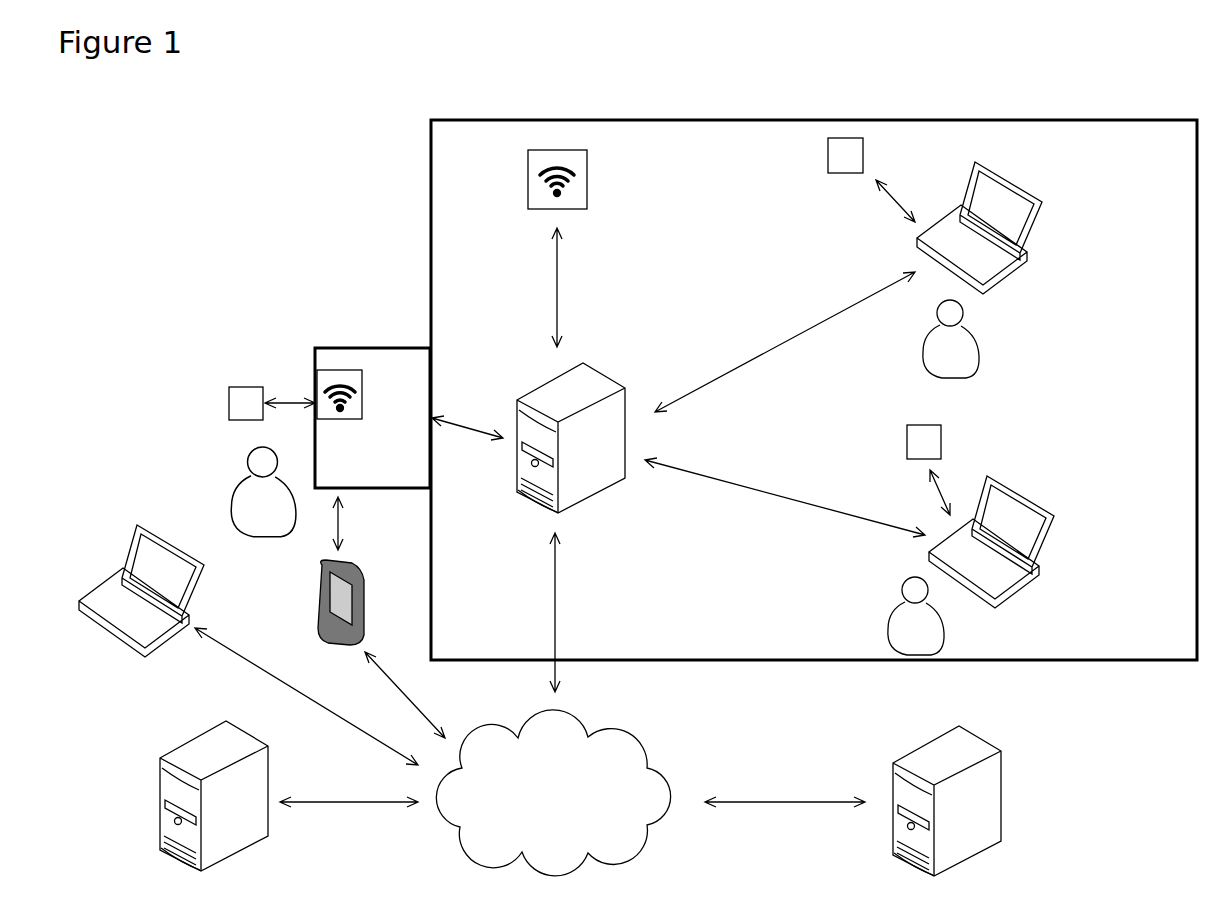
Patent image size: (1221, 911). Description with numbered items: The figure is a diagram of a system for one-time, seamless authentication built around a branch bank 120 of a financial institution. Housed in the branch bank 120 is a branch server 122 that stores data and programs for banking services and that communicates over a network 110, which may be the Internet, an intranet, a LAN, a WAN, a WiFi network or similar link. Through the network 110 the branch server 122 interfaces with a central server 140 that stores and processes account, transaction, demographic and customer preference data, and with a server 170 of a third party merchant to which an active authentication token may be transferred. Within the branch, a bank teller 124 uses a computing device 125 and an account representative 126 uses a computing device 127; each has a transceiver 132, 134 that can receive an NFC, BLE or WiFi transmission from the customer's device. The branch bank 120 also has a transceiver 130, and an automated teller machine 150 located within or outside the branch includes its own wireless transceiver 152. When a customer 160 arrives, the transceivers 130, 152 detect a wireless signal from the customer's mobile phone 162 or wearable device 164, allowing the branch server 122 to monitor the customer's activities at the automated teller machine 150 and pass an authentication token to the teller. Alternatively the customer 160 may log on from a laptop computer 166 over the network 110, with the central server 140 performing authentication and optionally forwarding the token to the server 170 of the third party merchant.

The network 110 is at (553, 793).
The branch bank 120 is at (430, 200).
The branch server 122 is at (587, 500).
The bank teller 124 is at (978, 345).
The computing device 125 is at (1017, 185).
The account representative 126 is at (942, 628).
The computing device 127 is at (1043, 548).
The transceiver 130 is at (528, 169).
The transceiver 132 is at (878, 150).
The transceiver 134 is at (941, 443).
The central server 140 is at (978, 735).
The automated teller machine 150 is at (387, 345).
The wireless transceiver 152 is at (334, 372).
The customer 160 is at (227, 497).
The mobile phone 162 is at (318, 595).
The wearable device 164 is at (250, 386).
The laptop computer 166 is at (128, 565).
The server 170 is at (158, 807).